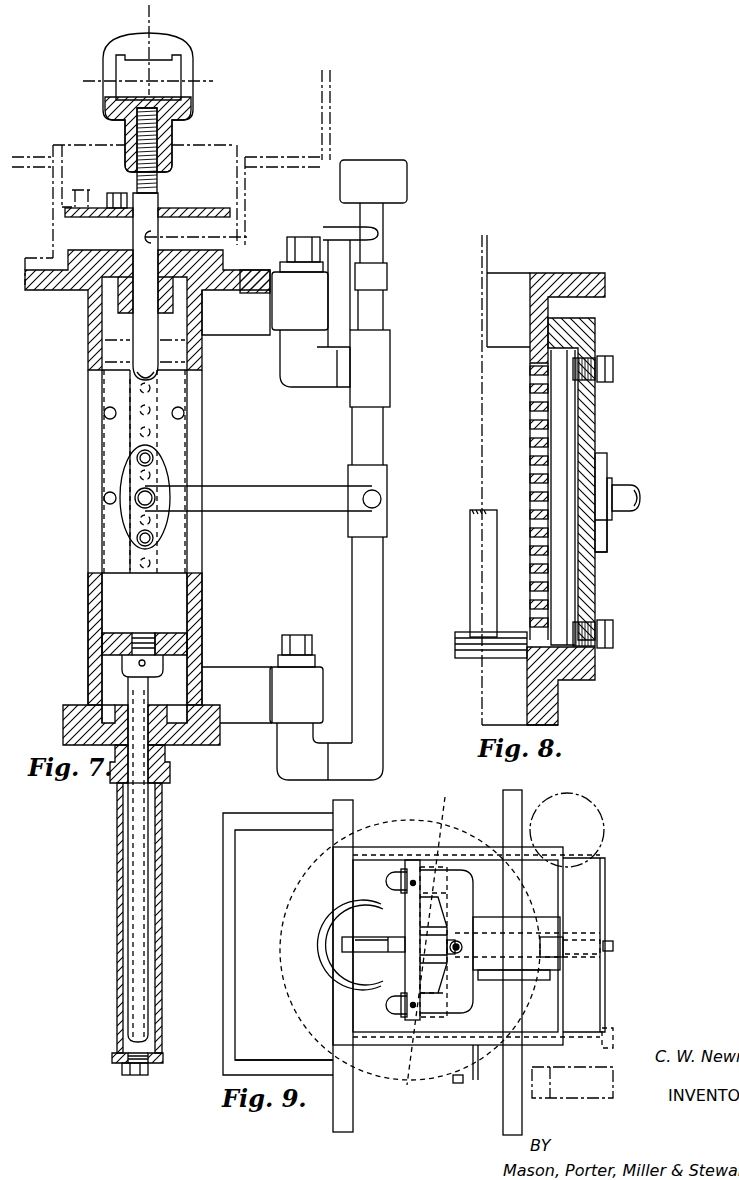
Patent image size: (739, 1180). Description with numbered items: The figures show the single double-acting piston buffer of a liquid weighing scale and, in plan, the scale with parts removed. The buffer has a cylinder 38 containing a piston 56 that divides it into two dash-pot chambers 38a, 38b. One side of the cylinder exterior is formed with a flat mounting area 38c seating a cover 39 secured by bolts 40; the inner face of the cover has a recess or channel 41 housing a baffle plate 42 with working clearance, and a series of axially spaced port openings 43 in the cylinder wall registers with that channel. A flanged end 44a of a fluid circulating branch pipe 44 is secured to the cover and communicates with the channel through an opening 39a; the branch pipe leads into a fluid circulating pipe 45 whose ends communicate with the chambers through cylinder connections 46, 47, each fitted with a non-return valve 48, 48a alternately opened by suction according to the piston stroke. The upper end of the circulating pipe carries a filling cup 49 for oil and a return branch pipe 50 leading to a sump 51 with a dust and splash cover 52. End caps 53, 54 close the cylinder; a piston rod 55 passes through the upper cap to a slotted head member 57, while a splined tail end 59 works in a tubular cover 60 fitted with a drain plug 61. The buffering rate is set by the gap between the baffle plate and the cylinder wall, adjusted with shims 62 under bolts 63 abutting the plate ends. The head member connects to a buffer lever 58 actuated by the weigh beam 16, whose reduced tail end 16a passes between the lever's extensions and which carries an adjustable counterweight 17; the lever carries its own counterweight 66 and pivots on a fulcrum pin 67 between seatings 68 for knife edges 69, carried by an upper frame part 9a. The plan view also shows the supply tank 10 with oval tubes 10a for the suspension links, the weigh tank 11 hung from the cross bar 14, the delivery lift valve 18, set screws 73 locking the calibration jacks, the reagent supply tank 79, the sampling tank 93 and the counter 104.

In FIG. 9, the upper frame part 9a is at (488, 1047).
In FIG. 9, the supply tank 10 is at (230, 958).
In FIG. 9, the oval tubes 10a is at (403, 880).
In FIG. 9, the weigh tank 11 is at (290, 953).
In FIG. 9, the cross bar 14 is at (412, 922).
In FIG. 9, the weigh beam 16 is at (465, 916).
In FIG. 9, the reduced tail end 16a is at (560, 953).
In FIG. 9, the adjustable counterweight 17 is at (537, 917).
In FIG. 9, the delivery lift valve 18 is at (377, 927).
In FIG. 7, the cylinder 38 is at (92, 590).
In FIG. 7, the upper working chamber 38a is at (107, 332).
In FIG. 7, the lower working chamber 38b is at (110, 687).
In FIG. 8, the flat mounting area 38c is at (550, 320).
In FIG. 7, the cover 39 is at (107, 465).
In FIG. 8, the cover 39 is at (595, 322).
In FIG. 8, the cover opening 39a is at (590, 507).
In FIG. 7, the bolts 40 is at (103, 412).
In FIG. 7, the recess or channel 41 is at (124, 436).
In FIG. 8, the recess or channel 41 is at (577, 405).
In FIG. 7, the baffle plate 42 is at (133, 445).
In FIG. 8, the baffle plate 42 is at (567, 427).
In FIG. 7, the port openings 43 is at (157, 430).
In FIG. 8, the port openings 43 is at (530, 412).
In FIG. 7, the fluid circulating branch pipe 44 is at (227, 493).
In FIG. 8, the fluid circulating branch pipe 44 is at (628, 513).
In FIG. 7, the flanged end 44a is at (127, 508).
In FIG. 8, the flanged end 44a is at (607, 470).
In FIG. 7, the fluid circulating pipe 45 is at (372, 433).
In FIG. 7, the cylinder connection 46 is at (232, 320).
In FIG. 7, the cylinder connection 47 is at (218, 673).
In FIG. 7, the non-return valve 48 is at (308, 313).
In FIG. 7, the non-return valve 48a is at (303, 703).
In FIG. 7, the filling cup 49 is at (397, 180).
In FIG. 7, the return branch pipe 50 is at (340, 230).
In FIG. 7, the sump 51 is at (68, 242).
In FIG. 7, the dust and splash cover 52 is at (193, 207).
In FIG. 7, the end cap 53 is at (100, 258).
In FIG. 7, the end cap 54 is at (182, 732).
In FIG. 7, the piston rod 55 is at (137, 355).
In FIG. 8, the piston rod 55 is at (473, 552).
In FIG. 7, the piston 56 is at (100, 642).
In FIG. 8, the piston 56 is at (470, 658).
In FIG. 7, the slotted head or eye member 57 is at (188, 80).
In FIG. 9, the buffer lever 58 is at (380, 953).
In FIG. 7, the splined tail end 59 is at (135, 837).
In FIG. 7, the tubular cover 60 is at (117, 928).
In FIG. 7, the drain plug 61 is at (128, 1075).
In FIG. 8, the distance washers or shims 62 is at (600, 353).
In FIG. 8, the bolts 63 is at (613, 372).
In FIG. 9, the adjustable counterweight 66 is at (342, 945).
In FIG. 9, the fulcrum pin 67 is at (440, 948).
In FIG. 9, the seatings 68 is at (430, 867).
In FIG. 9, the knife edges 69 is at (395, 1085).
In FIG. 9, the set screws 73 is at (615, 940).
In FIG. 9, the reagent supply tank 79 is at (590, 820).
In FIG. 9, the sampling tank 93 is at (597, 1075).
In FIG. 9, the counter 104 is at (613, 1037).